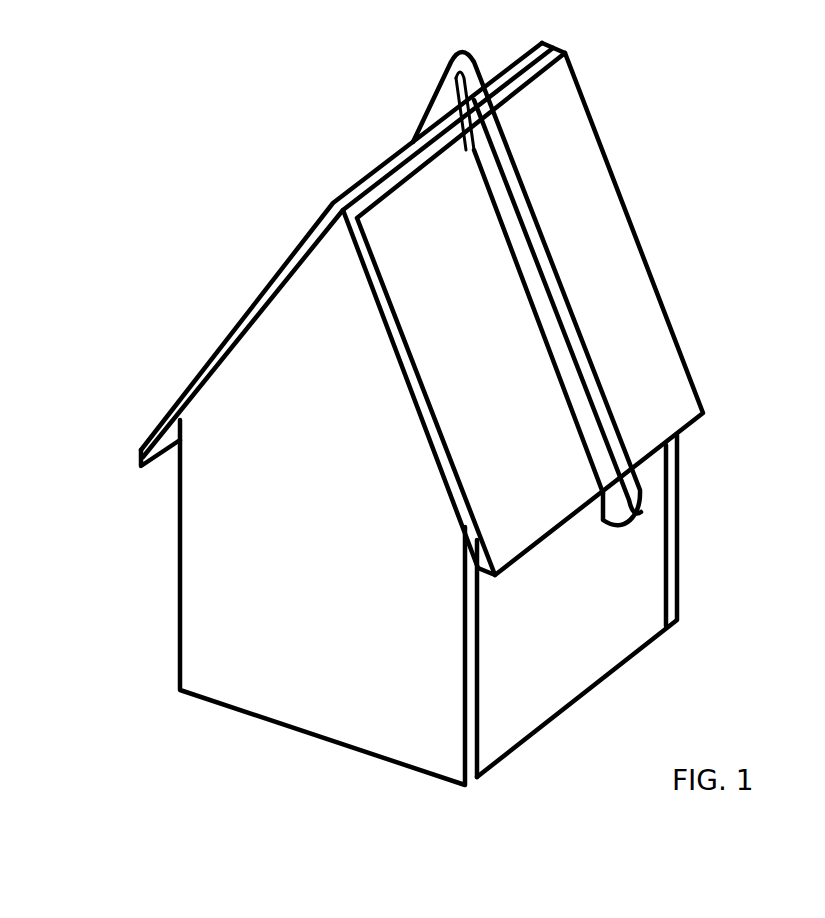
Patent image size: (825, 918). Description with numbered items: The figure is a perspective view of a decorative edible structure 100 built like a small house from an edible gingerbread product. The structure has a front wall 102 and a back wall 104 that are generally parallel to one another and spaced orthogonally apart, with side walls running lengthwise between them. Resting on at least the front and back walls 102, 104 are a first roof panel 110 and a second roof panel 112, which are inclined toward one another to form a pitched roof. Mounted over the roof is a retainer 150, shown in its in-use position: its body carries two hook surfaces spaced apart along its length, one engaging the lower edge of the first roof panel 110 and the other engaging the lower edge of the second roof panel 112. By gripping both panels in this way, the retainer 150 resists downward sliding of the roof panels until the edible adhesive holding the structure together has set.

The decorative edible structure 100 is at (636, 66).
The front wall 102 is at (218, 570).
The back wall 104 is at (680, 570).
The first roof panel 110 is at (575, 155).
The second roof panel 112 is at (232, 333).
The retainer 150 is at (452, 88).